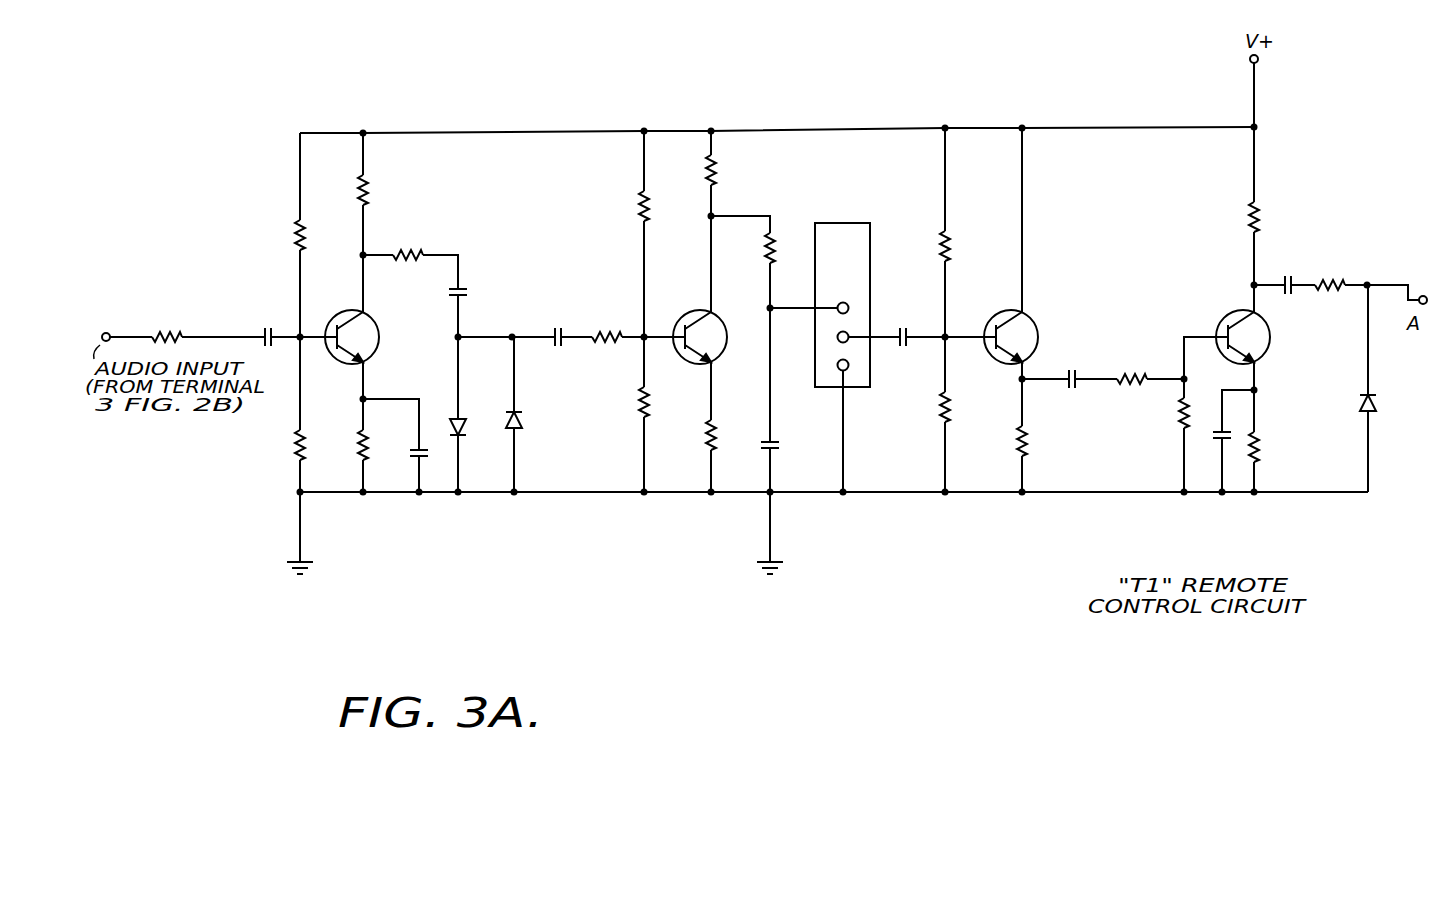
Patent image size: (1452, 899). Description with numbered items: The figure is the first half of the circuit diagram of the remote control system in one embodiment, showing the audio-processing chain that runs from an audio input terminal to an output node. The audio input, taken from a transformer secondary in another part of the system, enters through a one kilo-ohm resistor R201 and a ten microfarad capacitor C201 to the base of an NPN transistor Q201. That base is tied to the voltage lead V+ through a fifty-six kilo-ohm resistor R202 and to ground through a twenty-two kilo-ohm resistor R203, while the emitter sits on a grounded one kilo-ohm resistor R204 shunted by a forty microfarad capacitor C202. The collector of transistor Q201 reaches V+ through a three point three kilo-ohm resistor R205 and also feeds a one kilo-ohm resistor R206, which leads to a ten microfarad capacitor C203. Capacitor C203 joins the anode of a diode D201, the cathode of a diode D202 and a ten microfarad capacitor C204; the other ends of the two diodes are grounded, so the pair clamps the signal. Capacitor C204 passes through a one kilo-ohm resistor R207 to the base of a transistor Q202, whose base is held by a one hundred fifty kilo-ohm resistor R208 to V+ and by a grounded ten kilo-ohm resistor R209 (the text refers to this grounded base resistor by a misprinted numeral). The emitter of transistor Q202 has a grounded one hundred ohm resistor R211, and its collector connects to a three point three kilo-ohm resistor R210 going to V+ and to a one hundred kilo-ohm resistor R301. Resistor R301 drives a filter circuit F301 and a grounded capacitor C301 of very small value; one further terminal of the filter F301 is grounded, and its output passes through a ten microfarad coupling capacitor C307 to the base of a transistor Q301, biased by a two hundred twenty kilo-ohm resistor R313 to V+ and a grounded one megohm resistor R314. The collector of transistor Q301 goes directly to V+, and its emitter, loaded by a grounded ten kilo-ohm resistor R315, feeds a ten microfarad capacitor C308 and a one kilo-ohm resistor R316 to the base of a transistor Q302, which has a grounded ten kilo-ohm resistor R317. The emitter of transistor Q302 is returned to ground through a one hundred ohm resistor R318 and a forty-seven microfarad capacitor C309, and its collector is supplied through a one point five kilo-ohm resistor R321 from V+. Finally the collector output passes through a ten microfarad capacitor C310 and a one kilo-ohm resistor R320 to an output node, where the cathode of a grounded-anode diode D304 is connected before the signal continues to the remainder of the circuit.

The resistor R201 is at (183, 318).
The capacitor C201 is at (260, 329).
The resistor R202 is at (295, 239).
The resistor R203 is at (295, 454).
The resistor R204 is at (355, 470).
The resistor R205 is at (370, 186).
The resistor R206 is at (412, 238).
The NPN transistor Q201 is at (380, 337).
The capacitor C202 is at (428, 473).
The capacitor C203 is at (468, 292).
The diode D201 is at (466, 430).
The diode D202 is at (523, 424).
The capacitor C204 is at (562, 345).
The resistor R207 is at (612, 316).
The resistor R208 is at (639, 205).
The bias resistor R209 is at (639, 400).
The resistor R211 is at (707, 436).
The transistor Q202 is at (683, 318).
The resistor R210 is at (716, 176).
The resistor R301 is at (778, 239).
The capacitor C301 is at (782, 447).
The filter circuit F301 is at (884, 214).
The coupling capacitor C307 is at (922, 318).
The resistor R313 is at (985, 240).
The resistor R314 is at (940, 410).
The resistor R315 is at (1017, 442).
The transistor Q301 is at (1036, 326).
The capacitor C308 is at (1070, 390).
The resistor R316 is at (1135, 366).
The resistor R317 is at (1180, 416).
The transistor Q302 is at (1268, 348).
The resistor R318 is at (1260, 448).
The capacitor C309 is at (1215, 447).
The resistor R321 is at (1261, 212).
The capacitor C310 is at (1297, 263).
The resistor R320 is at (1329, 292).
The diode D304 is at (1378, 406).